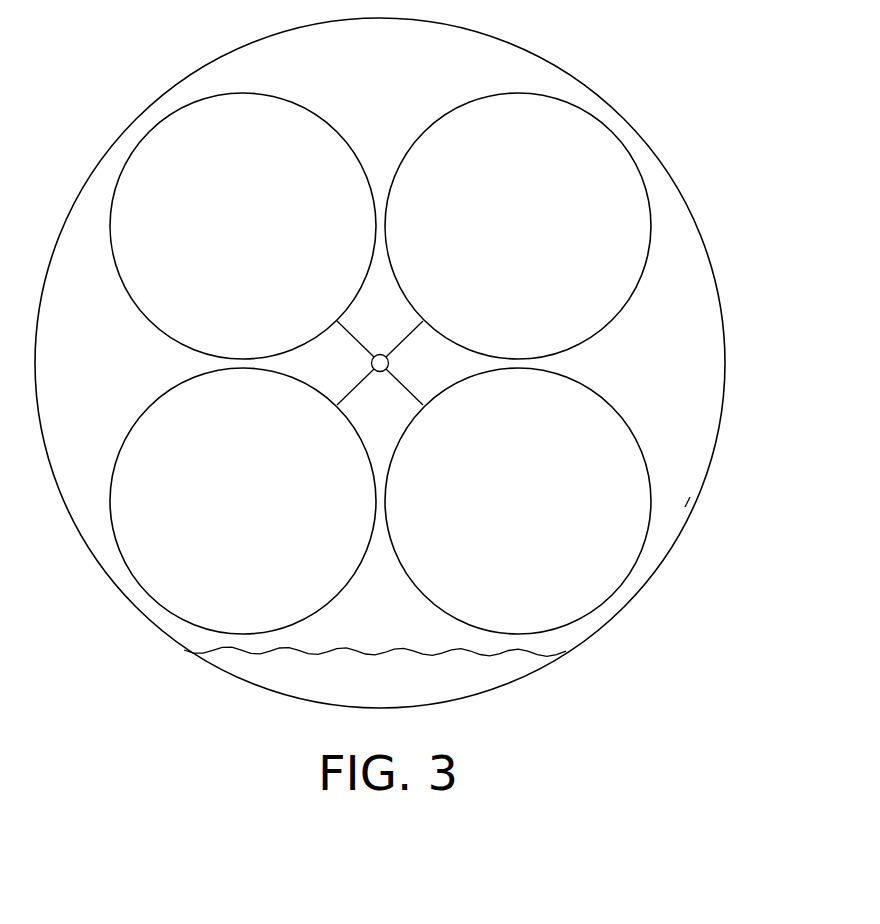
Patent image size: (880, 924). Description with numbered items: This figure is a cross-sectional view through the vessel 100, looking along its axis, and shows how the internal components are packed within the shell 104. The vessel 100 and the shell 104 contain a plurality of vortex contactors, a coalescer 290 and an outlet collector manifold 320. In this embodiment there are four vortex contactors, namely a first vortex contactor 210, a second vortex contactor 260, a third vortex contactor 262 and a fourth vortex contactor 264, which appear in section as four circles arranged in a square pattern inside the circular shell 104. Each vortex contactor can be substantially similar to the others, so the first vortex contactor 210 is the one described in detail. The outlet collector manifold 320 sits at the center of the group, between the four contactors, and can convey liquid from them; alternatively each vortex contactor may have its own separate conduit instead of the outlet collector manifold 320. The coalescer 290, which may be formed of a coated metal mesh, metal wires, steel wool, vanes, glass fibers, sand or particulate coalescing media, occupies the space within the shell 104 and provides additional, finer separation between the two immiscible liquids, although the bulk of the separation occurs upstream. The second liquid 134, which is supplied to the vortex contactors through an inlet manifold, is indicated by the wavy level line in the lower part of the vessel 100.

The vessel 100 is at (660, 162).
The shell 104 is at (692, 498).
The coalescer 290 is at (405, 93).
The third vortex contactor 262 is at (269, 240).
The first vortex contactor 210 is at (545, 240).
The fourth vortex contactor 264 is at (269, 517).
The second vortex contactor 260 is at (545, 517).
The outlet collector manifold 320 is at (389, 363).
The second liquid 134 is at (413, 693).